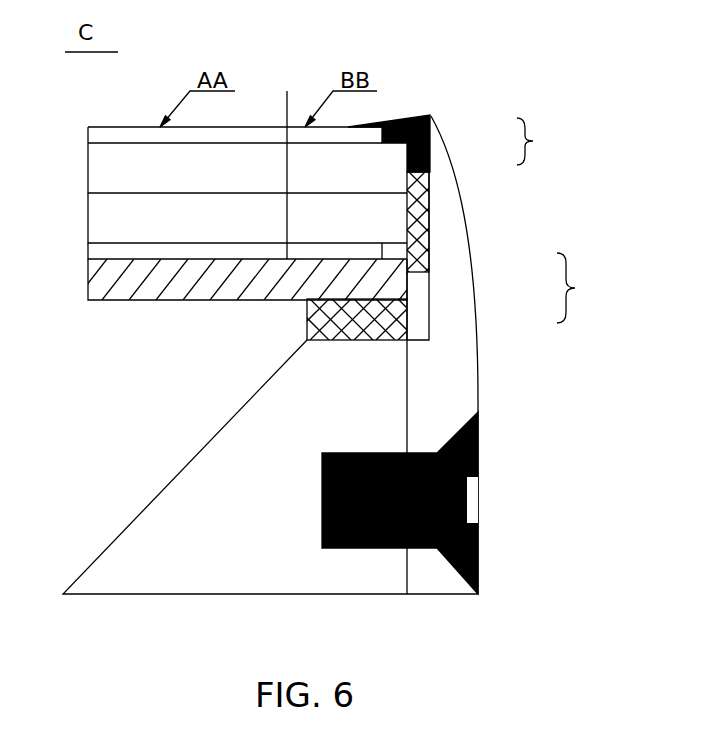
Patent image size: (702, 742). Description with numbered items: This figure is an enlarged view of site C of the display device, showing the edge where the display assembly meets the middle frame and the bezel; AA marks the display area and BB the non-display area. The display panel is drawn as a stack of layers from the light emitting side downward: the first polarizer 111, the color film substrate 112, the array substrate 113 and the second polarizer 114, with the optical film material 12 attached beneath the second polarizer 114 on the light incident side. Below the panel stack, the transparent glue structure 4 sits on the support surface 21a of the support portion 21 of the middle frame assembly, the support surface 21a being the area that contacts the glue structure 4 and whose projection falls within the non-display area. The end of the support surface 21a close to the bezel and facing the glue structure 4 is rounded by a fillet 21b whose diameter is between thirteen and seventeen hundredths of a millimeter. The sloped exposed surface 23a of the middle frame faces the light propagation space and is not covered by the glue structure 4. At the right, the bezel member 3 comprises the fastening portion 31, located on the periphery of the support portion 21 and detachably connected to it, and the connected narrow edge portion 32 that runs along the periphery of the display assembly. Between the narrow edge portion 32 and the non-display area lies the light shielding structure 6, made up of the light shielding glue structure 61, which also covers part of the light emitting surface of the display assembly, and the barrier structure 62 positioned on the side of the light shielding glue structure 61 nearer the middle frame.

The first polarizer 111 is at (88, 132).
The color film substrate 112 is at (88, 173).
The array substrate 113 is at (88, 218).
The second polarizer 114 is at (88, 253).
The optical film material 12 is at (88, 290).
The glue structure 4 is at (307, 322).
The support portion 21 is at (222, 537).
The support surface 21a is at (362, 340).
The fillet 21b is at (407, 340).
The exposed surface 23a is at (162, 492).
The light shielding structure 6 is at (534, 141).
The light shielding glue structure 61 is at (429, 131).
The barrier structure 62 is at (410, 196).
The bezel member 3 is at (501, 227).
The fastening portion 31 is at (450, 412).
The narrow edge portion 32 is at (450, 223).